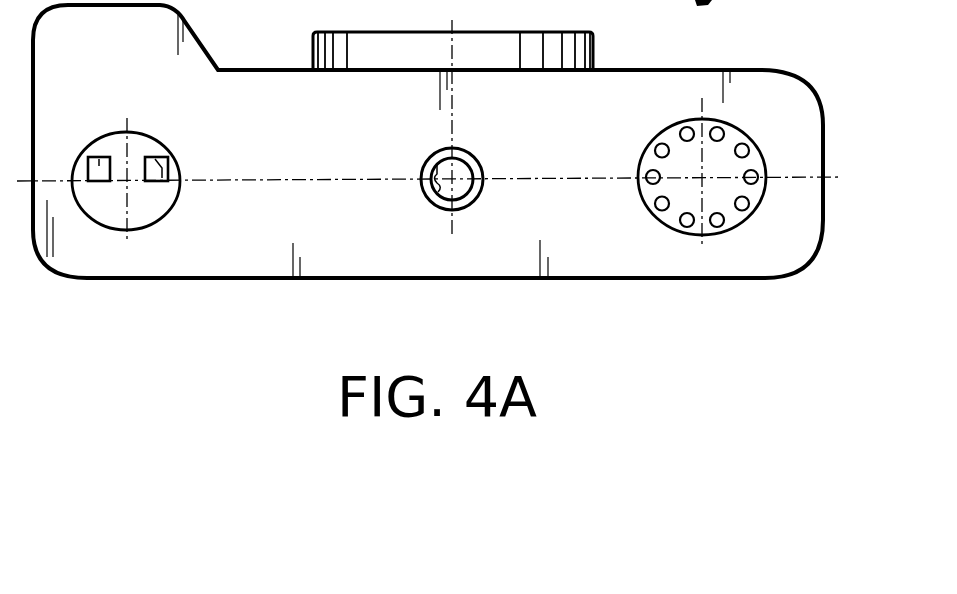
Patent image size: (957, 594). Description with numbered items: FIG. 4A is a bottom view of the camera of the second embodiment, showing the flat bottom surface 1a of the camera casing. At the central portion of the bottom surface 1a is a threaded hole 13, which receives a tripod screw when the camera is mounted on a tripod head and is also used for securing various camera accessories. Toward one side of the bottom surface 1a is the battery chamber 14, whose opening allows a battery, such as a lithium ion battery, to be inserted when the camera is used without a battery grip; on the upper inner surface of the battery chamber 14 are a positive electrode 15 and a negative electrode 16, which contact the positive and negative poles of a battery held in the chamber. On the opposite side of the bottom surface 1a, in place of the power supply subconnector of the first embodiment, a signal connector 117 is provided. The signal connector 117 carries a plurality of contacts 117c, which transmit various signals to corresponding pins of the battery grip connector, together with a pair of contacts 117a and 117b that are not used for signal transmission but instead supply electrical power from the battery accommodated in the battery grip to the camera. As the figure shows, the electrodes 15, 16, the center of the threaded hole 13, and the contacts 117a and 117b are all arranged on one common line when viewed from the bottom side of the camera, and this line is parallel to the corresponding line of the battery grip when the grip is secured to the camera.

The bottom surface 1a is at (358, 128).
The threaded hole 13 is at (437, 198).
The battery chamber 14 is at (97, 208).
The positive electrode 15 is at (100, 156).
The negative electrode 16 is at (168, 162).
The signal connector 117 is at (640, 148).
The contact 117a is at (795, 152).
The contact 117b is at (650, 180).
The contacts 117c is at (663, 145).